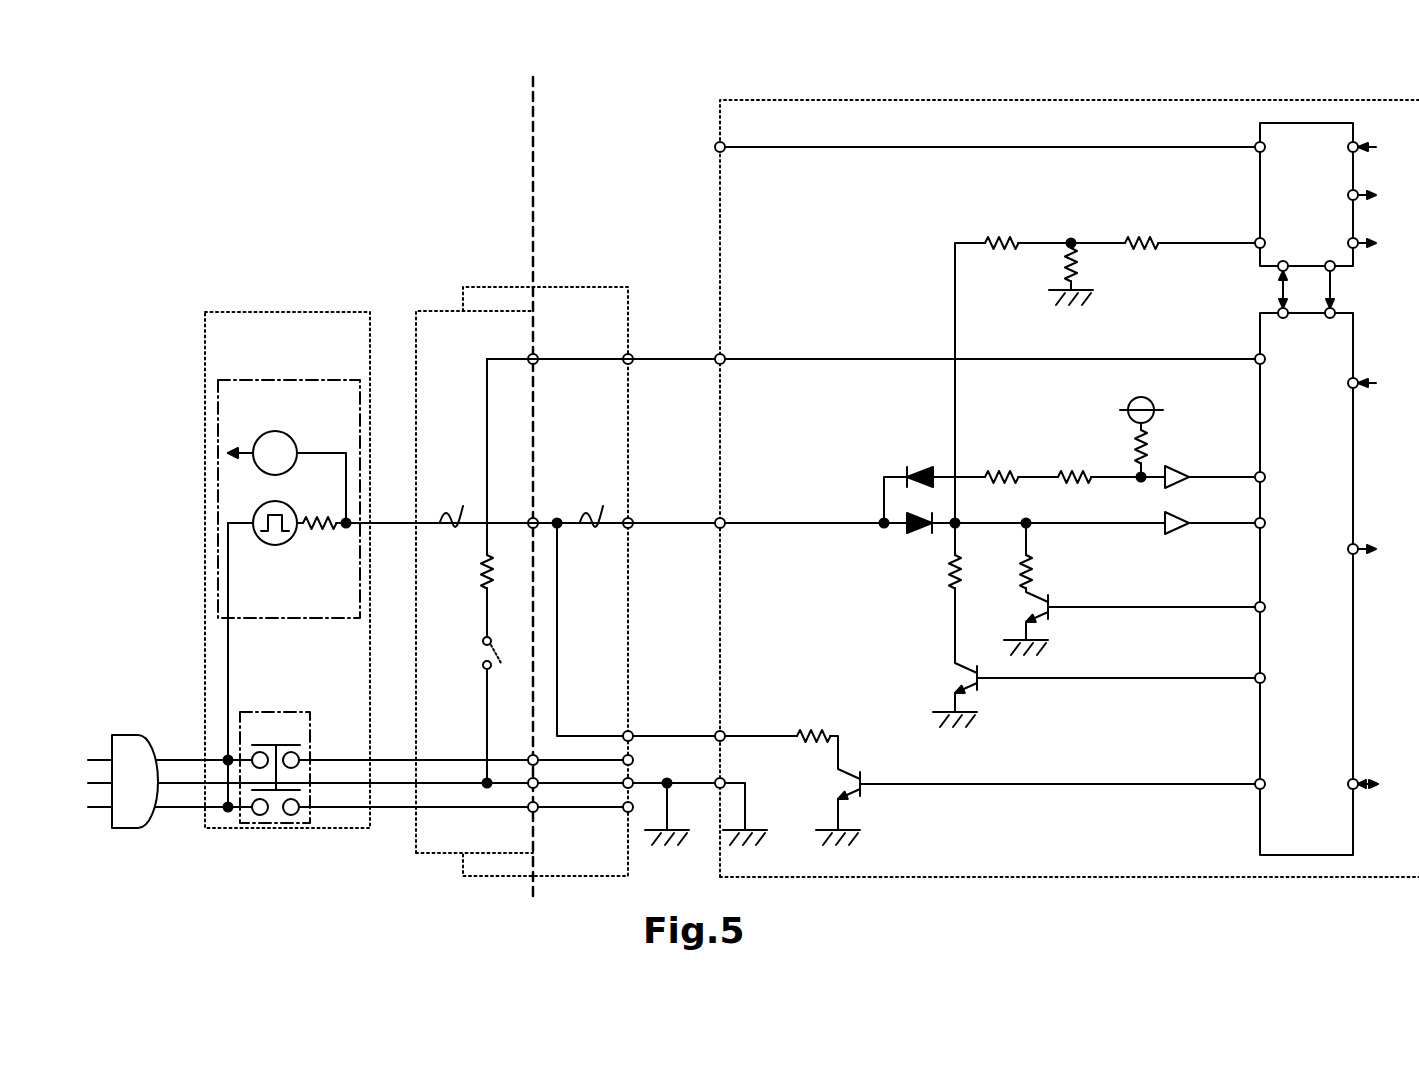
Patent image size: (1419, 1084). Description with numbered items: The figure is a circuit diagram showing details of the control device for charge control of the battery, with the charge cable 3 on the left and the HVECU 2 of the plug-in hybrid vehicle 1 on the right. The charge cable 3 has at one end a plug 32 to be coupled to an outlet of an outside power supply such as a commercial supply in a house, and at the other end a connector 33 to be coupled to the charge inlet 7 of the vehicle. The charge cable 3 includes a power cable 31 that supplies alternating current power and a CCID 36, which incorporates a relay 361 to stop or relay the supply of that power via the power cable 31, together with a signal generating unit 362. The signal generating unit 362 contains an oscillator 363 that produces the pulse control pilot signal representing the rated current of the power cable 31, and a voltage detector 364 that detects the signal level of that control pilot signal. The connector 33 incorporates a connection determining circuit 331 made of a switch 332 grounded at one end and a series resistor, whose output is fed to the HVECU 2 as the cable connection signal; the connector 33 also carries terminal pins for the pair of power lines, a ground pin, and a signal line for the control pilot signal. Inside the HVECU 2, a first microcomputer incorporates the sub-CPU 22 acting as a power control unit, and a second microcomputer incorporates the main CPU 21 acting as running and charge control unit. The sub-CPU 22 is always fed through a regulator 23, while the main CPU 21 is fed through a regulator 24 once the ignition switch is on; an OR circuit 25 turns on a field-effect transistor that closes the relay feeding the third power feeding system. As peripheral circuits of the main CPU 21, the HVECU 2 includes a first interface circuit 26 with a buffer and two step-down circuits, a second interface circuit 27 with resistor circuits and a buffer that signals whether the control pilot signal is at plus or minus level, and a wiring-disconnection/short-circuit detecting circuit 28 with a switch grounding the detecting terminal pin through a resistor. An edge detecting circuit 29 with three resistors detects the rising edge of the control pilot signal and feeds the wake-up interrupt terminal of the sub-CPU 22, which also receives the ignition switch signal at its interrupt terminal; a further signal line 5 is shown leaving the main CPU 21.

The plug-in hybrid vehicle 1 is at (600, 236).
The HVECU 2 is at (719, 181).
The charge cable 3 is at (390, 236).
The signal line 5 is at (1372, 785).
The charge inlet 7 is at (631, 305).
The main CPU 21 is at (1256, 814).
The sub-CPU 22 is at (1258, 179).
The regulator 23 is at (1376, 148).
The regulator 24 is at (1376, 384).
The OR circuit 25 is at (1376, 397).
The first interface circuit 26 is at (1028, 702).
The second interface circuit 27 is at (1050, 444).
The wiring-disconnection/short-circuit detecting circuit 28 is at (838, 730).
The edge detecting circuit 29 is at (1048, 209).
The power cable 31 is at (401, 810).
The plug 32 is at (135, 730).
The connector 33 is at (420, 305).
The CCID 36 is at (232, 305).
The connection determining circuit 331 is at (469, 602).
The switch 332 is at (485, 674).
The relay 361 is at (276, 712).
The signal generating unit 362 is at (292, 380).
The oscillator 363 is at (285, 558).
The voltage detector 364 is at (296, 440).